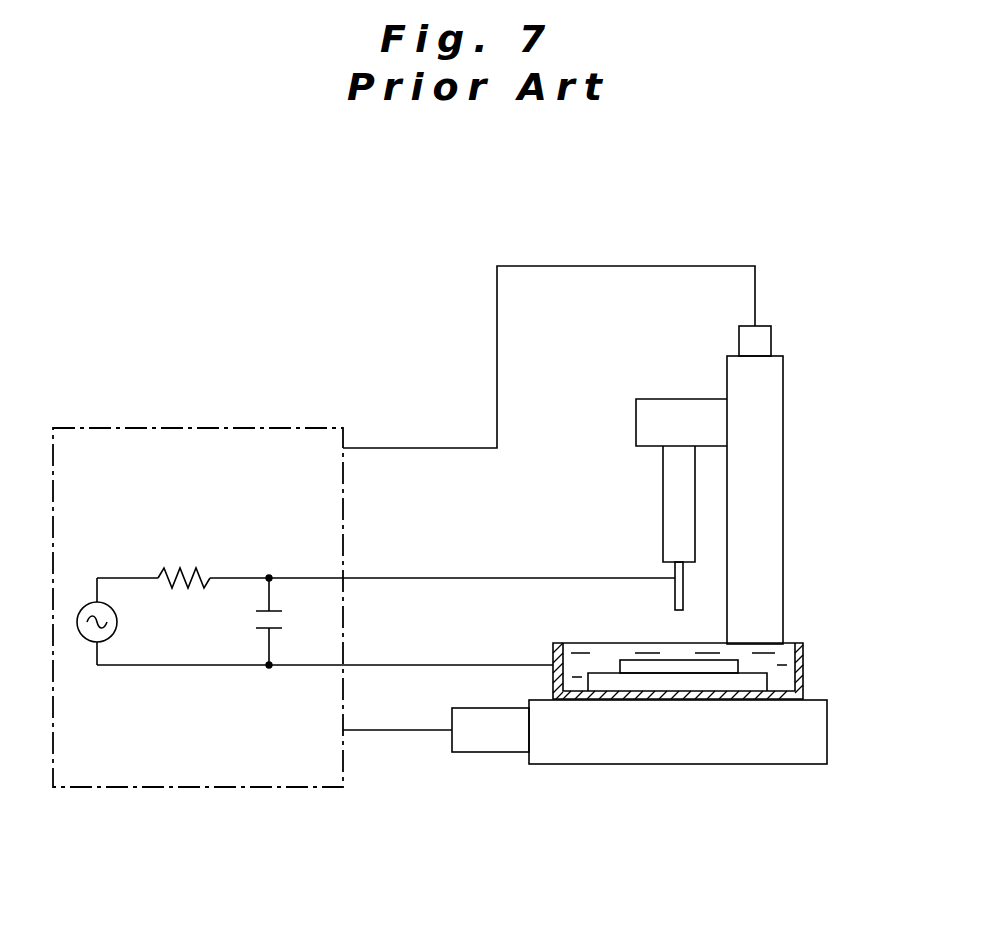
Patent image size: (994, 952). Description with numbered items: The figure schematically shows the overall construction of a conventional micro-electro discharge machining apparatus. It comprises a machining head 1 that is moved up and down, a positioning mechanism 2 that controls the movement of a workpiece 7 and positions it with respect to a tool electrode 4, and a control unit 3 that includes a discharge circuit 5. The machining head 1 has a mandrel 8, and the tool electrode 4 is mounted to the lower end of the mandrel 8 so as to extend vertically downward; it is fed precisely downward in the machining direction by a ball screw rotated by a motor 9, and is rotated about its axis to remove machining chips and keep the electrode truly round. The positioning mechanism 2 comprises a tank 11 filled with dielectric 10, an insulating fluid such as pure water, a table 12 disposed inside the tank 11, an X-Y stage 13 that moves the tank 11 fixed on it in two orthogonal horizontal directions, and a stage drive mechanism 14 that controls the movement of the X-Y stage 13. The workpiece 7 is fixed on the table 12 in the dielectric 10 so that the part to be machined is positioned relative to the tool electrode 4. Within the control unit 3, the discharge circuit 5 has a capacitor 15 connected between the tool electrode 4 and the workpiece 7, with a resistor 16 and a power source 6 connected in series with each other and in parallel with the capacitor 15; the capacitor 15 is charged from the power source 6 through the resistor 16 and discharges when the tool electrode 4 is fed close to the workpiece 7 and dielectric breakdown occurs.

The machining head 1 is at (718, 473).
The positioning mechanism 2 is at (639, 771).
The control unit 3 is at (233, 428).
The tool electrode 4 is at (671, 597).
The discharge circuit 5 is at (206, 643).
The power source 6 is at (118, 620).
The workpiece 7 is at (705, 658).
The mandrel 8 is at (669, 527).
The motor 9 is at (758, 342).
The dielectric 10 is at (800, 662).
The tank 11 is at (805, 678).
The table 12 is at (641, 680).
The X-Y stage 13 is at (755, 742).
The stage drive mechanism 14 is at (490, 732).
The capacitor 15 is at (270, 594).
The resistor 16 is at (194, 575).